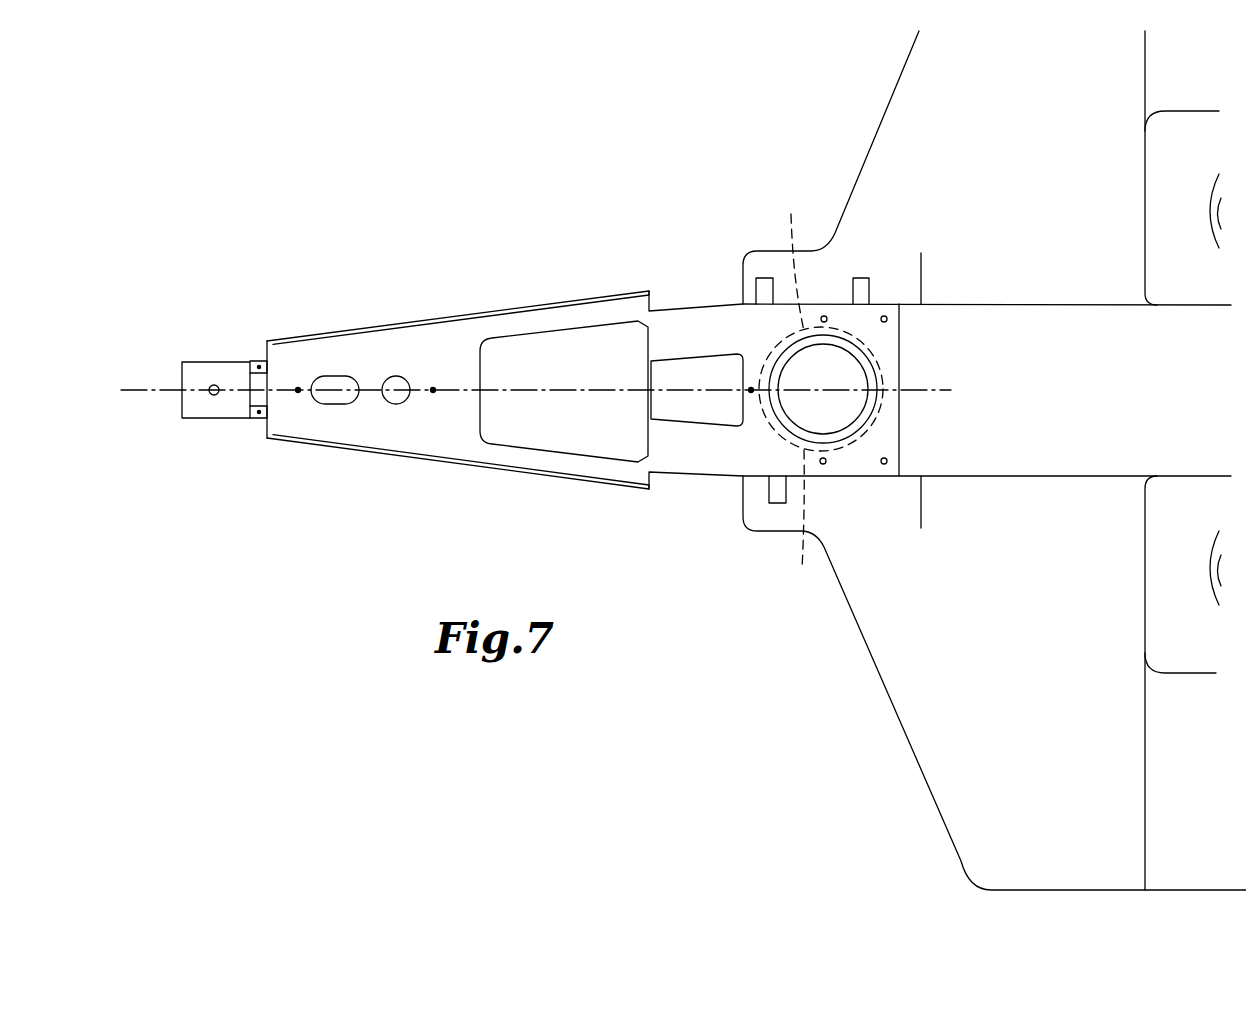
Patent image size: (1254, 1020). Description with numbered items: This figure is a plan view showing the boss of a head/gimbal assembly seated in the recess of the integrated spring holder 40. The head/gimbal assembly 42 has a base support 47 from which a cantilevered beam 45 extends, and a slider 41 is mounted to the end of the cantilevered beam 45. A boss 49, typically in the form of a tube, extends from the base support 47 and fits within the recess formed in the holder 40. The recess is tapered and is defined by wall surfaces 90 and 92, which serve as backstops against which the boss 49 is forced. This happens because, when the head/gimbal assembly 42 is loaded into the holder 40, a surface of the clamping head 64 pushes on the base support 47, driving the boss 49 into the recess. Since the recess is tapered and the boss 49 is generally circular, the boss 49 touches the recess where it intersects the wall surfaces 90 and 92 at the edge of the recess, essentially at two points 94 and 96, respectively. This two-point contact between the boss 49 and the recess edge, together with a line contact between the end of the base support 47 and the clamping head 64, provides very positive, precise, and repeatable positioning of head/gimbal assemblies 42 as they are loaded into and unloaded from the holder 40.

The holder 40 is at (878, 672).
The slider 41 is at (220, 368).
The head/gimbal assembly 42 is at (433, 313).
The cantilevered beam 45 is at (342, 448).
The base support 47 is at (873, 317).
The boss 49 is at (867, 367).
The clamping head 64 is at (1063, 320).
The wall surface 90 is at (821, 319).
The wall surface 92 is at (802, 526).
The contact point 94 is at (787, 350).
The contact point 96 is at (787, 430).